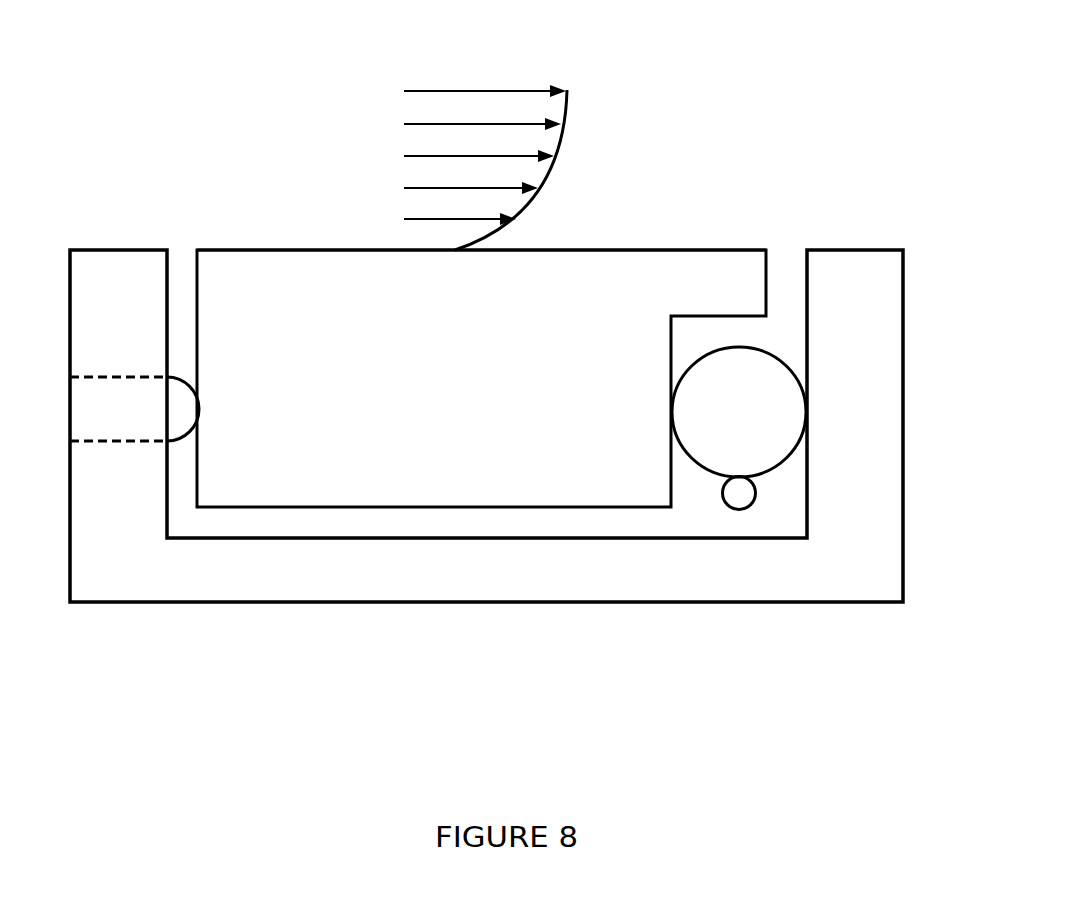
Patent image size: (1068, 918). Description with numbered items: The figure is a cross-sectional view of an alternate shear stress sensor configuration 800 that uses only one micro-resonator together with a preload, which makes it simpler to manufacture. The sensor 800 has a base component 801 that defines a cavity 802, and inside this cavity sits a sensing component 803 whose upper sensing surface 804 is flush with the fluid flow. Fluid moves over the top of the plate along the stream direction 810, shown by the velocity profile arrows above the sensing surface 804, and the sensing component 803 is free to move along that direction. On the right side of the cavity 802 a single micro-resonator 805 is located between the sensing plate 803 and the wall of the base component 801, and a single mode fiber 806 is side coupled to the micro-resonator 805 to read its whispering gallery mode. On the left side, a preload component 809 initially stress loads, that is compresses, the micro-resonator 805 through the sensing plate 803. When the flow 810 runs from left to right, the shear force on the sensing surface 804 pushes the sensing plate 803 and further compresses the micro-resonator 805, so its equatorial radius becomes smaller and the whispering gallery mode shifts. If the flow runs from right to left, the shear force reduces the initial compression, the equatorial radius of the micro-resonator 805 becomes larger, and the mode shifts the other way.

The sensor configuration 800 is at (495, 797).
The base component 801 is at (870, 349).
The cavity 802 is at (775, 508).
The sensing component 803 is at (470, 475).
The sensing surface 804 is at (232, 250).
The micro-resonator 805 is at (711, 420).
The single mode fiber 806 is at (738, 510).
The preload component 809 is at (133, 410).
The stream direction 810 is at (556, 158).